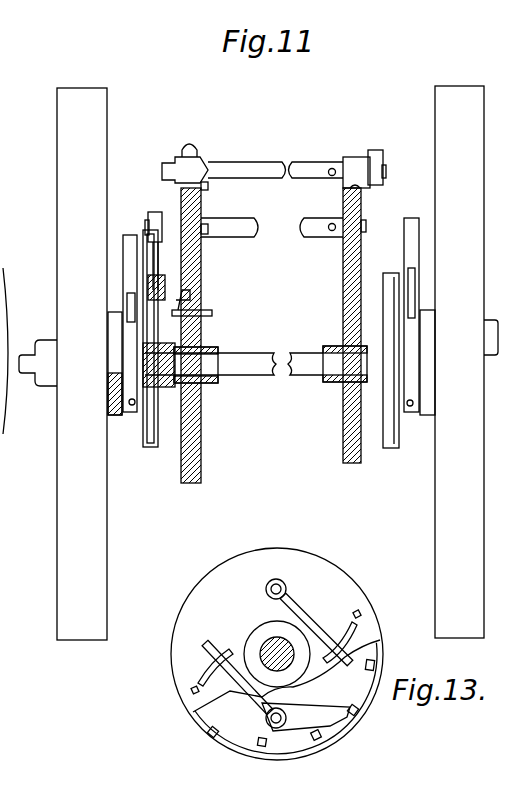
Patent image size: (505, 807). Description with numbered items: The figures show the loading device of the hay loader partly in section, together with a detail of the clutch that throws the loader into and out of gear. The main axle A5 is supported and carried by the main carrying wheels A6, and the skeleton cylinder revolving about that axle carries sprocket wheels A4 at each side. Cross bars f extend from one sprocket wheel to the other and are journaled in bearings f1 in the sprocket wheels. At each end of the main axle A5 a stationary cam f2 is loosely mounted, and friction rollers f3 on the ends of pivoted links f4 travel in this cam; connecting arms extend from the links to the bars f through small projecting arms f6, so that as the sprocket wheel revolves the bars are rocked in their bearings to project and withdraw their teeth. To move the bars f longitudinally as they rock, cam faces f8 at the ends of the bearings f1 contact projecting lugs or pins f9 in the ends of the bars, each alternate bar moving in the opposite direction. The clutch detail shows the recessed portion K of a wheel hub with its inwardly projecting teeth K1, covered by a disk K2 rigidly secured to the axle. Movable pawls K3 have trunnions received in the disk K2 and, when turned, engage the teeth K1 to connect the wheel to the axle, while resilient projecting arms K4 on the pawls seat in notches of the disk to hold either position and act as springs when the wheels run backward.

In FIG. 11, the sprocket wheels A4 is at (190, 147).
In FIG. 11, the main axle A5 is at (256, 358).
In FIG. 11, the main carrying wheels A6 is at (270, 363).
In FIG. 11, the cross bars f is at (290, 165).
In FIG. 11, the bearings f1 is at (178, 158).
In FIG. 11, the stationary cam f2 is at (148, 448).
In FIG. 11, the friction rollers f3 is at (150, 280).
In FIG. 11, the pivoted links f4 is at (196, 300).
In FIG. 11, the small projecting arms f6 is at (376, 150).
In FIG. 11, the cam faces f8 is at (205, 162).
In FIG. 11, the projecting lugs or pins f9 is at (338, 188).
In FIG. 13, the recessed portion K is at (286, 667).
In FIG. 13, the inwardly projecting teeth K1 is at (228, 738).
In FIG. 13, the disk K2 is at (277, 654).
In FIG. 13, the movable pawls K3 is at (330, 724).
In FIG. 13, the projecting arms K4 is at (312, 615).